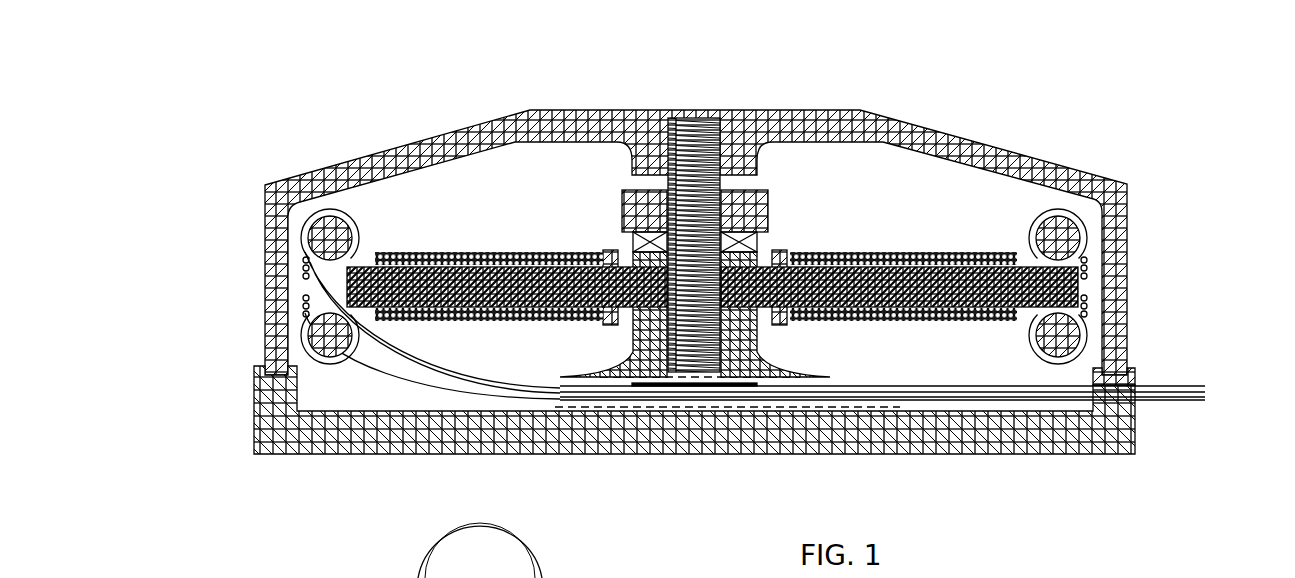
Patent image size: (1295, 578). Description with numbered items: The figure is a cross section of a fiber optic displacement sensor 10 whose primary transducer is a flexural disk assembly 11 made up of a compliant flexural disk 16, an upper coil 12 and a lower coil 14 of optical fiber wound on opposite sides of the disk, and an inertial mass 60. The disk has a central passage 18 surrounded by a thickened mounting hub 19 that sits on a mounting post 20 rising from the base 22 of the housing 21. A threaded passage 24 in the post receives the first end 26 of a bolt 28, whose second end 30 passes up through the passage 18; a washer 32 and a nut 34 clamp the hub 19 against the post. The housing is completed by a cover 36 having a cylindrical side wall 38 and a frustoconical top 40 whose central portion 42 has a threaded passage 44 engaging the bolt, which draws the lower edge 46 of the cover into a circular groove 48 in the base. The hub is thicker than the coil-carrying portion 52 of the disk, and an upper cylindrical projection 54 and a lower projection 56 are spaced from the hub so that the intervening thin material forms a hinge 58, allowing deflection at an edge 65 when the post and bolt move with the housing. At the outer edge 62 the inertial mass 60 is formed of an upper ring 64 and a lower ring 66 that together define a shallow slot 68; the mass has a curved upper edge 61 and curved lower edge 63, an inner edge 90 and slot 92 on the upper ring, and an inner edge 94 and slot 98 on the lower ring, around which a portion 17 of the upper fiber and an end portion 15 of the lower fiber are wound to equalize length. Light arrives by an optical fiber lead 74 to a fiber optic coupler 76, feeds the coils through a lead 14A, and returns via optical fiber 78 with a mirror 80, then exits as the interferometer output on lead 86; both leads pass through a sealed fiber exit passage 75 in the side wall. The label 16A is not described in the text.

The displacement sensor 10 is at (285, 135).
The flexural disk assembly 11 is at (450, 238).
The upper coil 12 is at (938, 250).
The lower coil 14 is at (900, 340).
The lead 14A is at (310, 380).
The end portion 15 is at (285, 360).
The flexural disk 16 is at (945, 330).
The flex cable 16A is at (363, 330).
The portion 17 is at (335, 213).
The central passage 18 is at (640, 330).
The mounting hub 19 is at (600, 248).
The mounting post 20 is at (555, 400).
The housing 21 is at (258, 183).
The base 22 is at (320, 455).
The threaded passage 24 is at (698, 312).
The first end 26 is at (678, 372).
The bolt 28 is at (712, 340).
The second end 30 is at (690, 116).
The washer 32 is at (652, 232).
The nut 34 is at (622, 208).
The cover 36 is at (382, 150).
The side wall 38 is at (265, 244).
The top 40 is at (515, 122).
The central portion 42 is at (775, 109).
The threaded passage 44 is at (716, 130).
The lower edge 46 is at (265, 382).
The circular groove 48 is at (262, 362).
The portion 52 is at (482, 330).
The upper cylindrical projection 54 is at (768, 251).
The cylindrical projection 56 is at (783, 326).
The hinge 58 is at (755, 242).
The inertial mass 60 is at (245, 265).
The curved upper edge 61 is at (1060, 214).
The outer edge 62 is at (1080, 285).
The curved lower edge 63 is at (1045, 343).
The upper ring 64 is at (1143, 220).
The edge 65 is at (590, 246).
The lower ring 66 is at (1090, 338).
The slot 68 is at (255, 296).
The optical fiber lead 74 is at (1195, 388).
The fiber exit passage 75 is at (1150, 408).
The fiber optic coupler 76 is at (730, 392).
The optical fiber 78 is at (1013, 250).
The mirror 80 is at (1025, 332).
The optical fiber lead 86 is at (1197, 402).
The inner edge 90 is at (1017, 222).
The slot 92 is at (1160, 234).
The inner edge 94 is at (1010, 360).
The slot 98 is at (1092, 320).